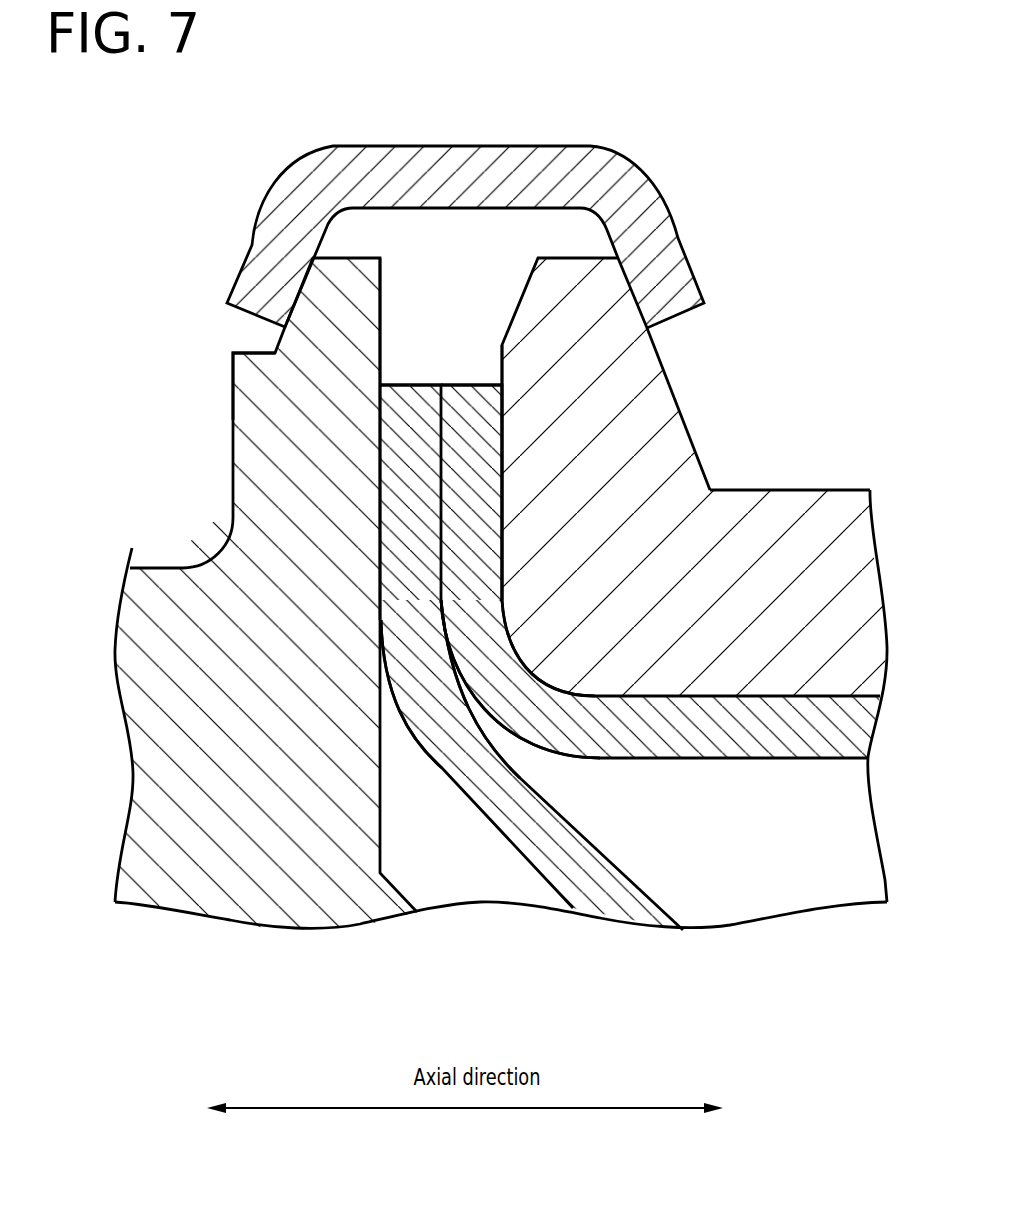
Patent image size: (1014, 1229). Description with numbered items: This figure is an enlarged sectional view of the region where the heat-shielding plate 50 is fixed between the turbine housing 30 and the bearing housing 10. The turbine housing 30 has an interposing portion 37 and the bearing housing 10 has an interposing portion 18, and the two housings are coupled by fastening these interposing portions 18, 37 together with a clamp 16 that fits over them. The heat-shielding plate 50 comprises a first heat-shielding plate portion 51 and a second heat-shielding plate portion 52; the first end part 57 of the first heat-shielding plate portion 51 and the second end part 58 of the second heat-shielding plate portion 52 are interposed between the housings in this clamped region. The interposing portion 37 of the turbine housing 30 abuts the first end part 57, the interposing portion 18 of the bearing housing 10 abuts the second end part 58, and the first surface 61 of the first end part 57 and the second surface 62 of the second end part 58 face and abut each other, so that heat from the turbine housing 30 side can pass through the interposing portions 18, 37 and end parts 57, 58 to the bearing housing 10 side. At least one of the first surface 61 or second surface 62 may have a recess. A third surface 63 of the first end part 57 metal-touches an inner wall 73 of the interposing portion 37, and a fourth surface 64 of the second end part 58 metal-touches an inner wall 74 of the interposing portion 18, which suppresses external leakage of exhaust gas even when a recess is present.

The bearing housing 10 is at (170, 565).
The clamp 16 is at (673, 225).
The interposing portion 18 is at (233, 397).
The turbine housing 30 is at (800, 488).
The interposing portion 37 is at (675, 388).
The heat-shielding plate 50 is at (630, 826).
The first heat-shielding plate portion 51 is at (811, 732).
The second heat-shielding plate portion 52 is at (610, 890).
The first end part 57 is at (484, 392).
The second end part 58 is at (416, 392).
The first surface 61 is at (438, 423).
The second surface 62 is at (440, 423).
The third surface 63 is at (503, 428).
The fourth surface 64 is at (378, 410).
The inner wall 73 is at (502, 511).
The inner wall 74 is at (381, 513).